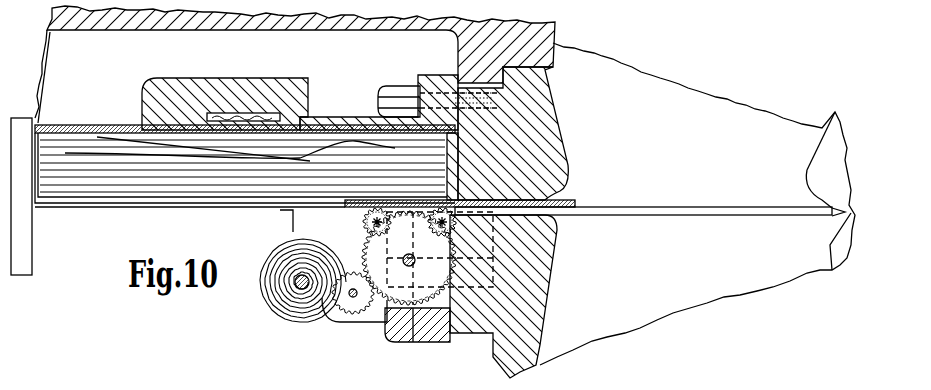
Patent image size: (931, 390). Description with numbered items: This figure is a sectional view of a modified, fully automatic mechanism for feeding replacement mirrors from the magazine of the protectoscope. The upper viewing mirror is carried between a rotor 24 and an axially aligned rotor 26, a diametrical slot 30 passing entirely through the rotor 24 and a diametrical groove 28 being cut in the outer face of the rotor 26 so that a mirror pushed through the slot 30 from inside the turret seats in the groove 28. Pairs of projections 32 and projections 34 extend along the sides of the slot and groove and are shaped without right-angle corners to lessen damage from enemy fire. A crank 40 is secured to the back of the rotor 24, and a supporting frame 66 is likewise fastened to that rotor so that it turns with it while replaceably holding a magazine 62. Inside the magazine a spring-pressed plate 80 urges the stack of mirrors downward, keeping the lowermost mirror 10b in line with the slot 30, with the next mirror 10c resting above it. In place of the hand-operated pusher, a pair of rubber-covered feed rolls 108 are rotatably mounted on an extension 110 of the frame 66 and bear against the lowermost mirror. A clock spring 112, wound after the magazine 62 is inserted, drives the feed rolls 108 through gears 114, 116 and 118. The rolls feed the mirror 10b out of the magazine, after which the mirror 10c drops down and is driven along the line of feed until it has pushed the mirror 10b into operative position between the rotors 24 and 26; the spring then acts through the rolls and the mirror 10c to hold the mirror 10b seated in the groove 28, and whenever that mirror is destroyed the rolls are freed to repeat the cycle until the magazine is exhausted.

The rotor 24 is at (553, 108).
The rotor 26 is at (826, 133).
The groove 28 is at (828, 222).
The slot 30 is at (558, 203).
The projections 32 is at (558, 230).
The projections 34 is at (826, 247).
The crank 40 is at (437, 335).
The magazine 62 is at (65, 126).
The supporting frame 66 is at (233, 80).
The spring-pressed plate 80 is at (87, 150).
The lowermost mirror 10b is at (692, 212).
The next mirror 10c is at (118, 198).
The feed rolls 108 is at (452, 228).
The extension 110 is at (292, 232).
The clock spring 112 is at (287, 322).
The gear 114 is at (362, 305).
The gear 116 is at (366, 246).
The gear 118 is at (437, 223).